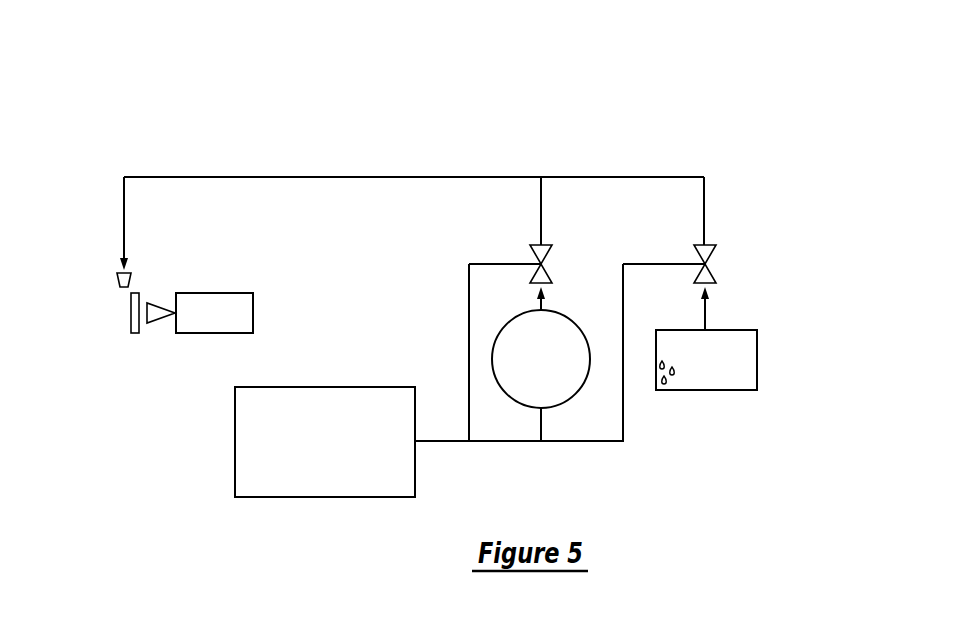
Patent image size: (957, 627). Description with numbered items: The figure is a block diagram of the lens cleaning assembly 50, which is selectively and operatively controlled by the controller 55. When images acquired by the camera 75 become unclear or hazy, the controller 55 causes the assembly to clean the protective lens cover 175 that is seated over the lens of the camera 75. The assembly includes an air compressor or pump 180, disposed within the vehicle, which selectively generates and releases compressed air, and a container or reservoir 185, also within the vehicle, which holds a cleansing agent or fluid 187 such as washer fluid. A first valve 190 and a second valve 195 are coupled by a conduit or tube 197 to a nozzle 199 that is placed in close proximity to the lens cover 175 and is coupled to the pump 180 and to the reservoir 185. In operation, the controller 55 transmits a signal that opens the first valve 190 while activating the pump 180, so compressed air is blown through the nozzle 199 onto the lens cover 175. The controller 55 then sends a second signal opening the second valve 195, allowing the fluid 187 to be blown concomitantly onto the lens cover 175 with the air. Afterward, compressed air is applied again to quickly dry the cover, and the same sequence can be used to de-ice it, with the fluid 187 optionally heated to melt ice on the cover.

The lens cleaning assembly 50 is at (665, 140).
The controller 55 is at (319, 486).
The camera 75 is at (236, 315).
The protective lens cover 175 is at (131, 313).
The air compressor or pump 180 is at (557, 393).
The container or reservoir 185 is at (748, 362).
The cleansing agent or fluid 187 is at (663, 390).
The first valve 190 is at (549, 262).
The second valve 195 is at (716, 262).
The conduit or tube 197 is at (366, 177).
The nozzle 199 is at (117, 279).